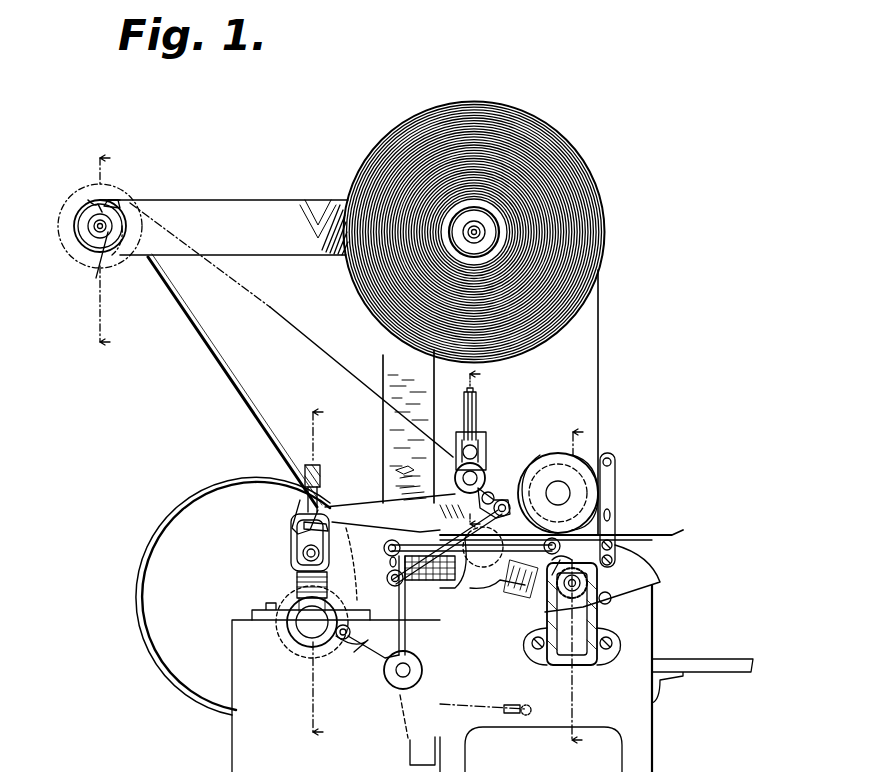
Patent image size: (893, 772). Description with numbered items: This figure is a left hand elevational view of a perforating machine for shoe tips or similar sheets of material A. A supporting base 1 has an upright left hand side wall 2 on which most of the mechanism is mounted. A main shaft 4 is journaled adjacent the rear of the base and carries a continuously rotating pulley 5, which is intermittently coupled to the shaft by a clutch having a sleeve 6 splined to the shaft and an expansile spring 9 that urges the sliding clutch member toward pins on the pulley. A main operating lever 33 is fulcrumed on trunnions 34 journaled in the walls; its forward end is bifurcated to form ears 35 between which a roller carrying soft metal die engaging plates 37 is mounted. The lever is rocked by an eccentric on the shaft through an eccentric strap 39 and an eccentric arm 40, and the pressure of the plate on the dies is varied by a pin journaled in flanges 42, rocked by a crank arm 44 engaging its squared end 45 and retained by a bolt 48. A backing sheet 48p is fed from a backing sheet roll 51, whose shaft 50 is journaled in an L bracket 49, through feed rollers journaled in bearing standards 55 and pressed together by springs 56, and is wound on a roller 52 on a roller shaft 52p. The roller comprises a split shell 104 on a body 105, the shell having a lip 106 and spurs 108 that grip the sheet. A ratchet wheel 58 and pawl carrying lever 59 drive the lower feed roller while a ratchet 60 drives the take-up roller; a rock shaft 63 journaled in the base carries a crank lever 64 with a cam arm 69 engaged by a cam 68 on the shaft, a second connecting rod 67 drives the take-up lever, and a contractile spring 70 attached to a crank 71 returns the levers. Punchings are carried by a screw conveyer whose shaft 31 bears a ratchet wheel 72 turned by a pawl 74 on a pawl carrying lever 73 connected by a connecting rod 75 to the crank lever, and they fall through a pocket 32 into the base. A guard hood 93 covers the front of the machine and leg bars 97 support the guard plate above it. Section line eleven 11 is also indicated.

The supporting base 1 is at (648, 757).
The left hand upright side wall 2 is at (427, 696).
The main shaft 4 is at (304, 640).
The continuously rotating pulley 5 is at (258, 535).
The sleeve 6 is at (314, 572).
The expansile spring 9 is at (468, 447).
The section line 11- 11 is at (105, 251).
The conveyer shaft 31 is at (590, 584).
The pocket 32 is at (592, 665).
The main operating lever 33 is at (378, 522).
The trunnions 34 is at (471, 565).
The ears 35 is at (540, 460).
The die engaging plate 37 is at (590, 468).
The eccentric strap 39 is at (286, 604).
The eccentric arm 40 is at (297, 584).
The flanges 42 is at (292, 565).
The crank arm 44 is at (316, 465).
The squared end 45 is at (298, 558).
The bolt 48 is at (300, 514).
The backing sheet 48p is at (295, 312).
The L bracket 49 is at (396, 360).
The shaft 50 is at (474, 236).
The backing sheet roll 51 is at (600, 188).
The roller 52 is at (78, 240).
The roller shaft 52p is at (105, 264).
The bearing standards 55 is at (413, 487).
The springs 56 is at (478, 398).
The ratchet wheel 58 is at (450, 470).
The pawl carrying lever 59 is at (490, 492).
The ratchet 60 is at (438, 517).
The rock shaft 63 is at (423, 672).
The crank lever 64 is at (408, 634).
The second connecting rod 67 is at (235, 380).
The cam 68 is at (330, 648).
The cam arm 69 is at (348, 640).
The contractile spring 70 is at (480, 702).
The crank 71 is at (412, 723).
The ratchet wheel 72 is at (585, 606).
The pawl carrying lever 73 is at (616, 548).
The pawl 74 is at (545, 585).
The connecting rod 75 is at (488, 570).
The guard hood 93 is at (662, 582).
The leg bars 97 is at (616, 470).
The shell 104 is at (135, 205).
The body 105 is at (126, 240).
The lip 106 is at (118, 204).
The spurs 108 is at (90, 200).
The shoe tip or sheet of material A is at (683, 530).